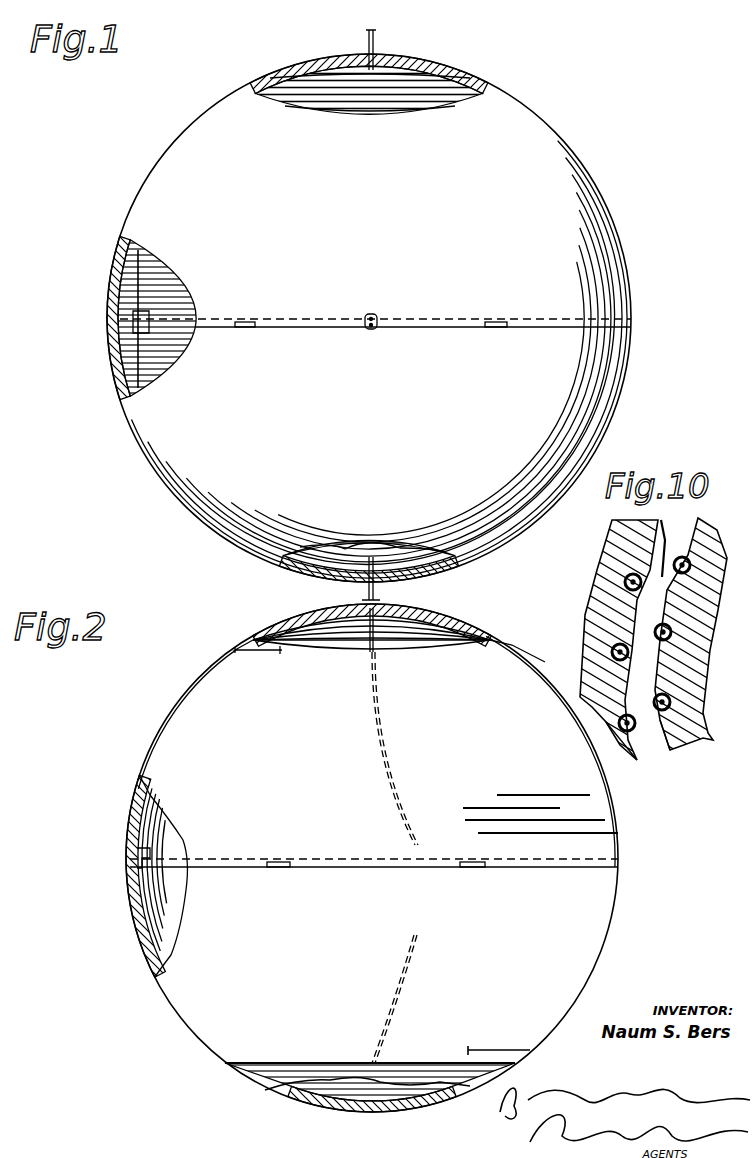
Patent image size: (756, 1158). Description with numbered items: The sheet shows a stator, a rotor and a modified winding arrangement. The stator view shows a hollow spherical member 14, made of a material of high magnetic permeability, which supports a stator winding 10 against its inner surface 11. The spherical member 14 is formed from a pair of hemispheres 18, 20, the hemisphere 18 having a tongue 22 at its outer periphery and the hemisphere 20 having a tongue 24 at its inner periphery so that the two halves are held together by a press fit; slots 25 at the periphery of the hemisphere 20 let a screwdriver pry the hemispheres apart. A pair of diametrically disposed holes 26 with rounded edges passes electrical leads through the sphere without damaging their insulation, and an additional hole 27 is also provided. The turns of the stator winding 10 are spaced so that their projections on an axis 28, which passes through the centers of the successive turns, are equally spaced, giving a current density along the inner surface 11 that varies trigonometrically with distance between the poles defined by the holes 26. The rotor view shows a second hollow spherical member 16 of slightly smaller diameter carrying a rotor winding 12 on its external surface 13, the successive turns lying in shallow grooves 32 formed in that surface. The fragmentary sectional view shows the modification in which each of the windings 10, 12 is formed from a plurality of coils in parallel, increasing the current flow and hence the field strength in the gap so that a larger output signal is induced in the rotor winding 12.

In FIG. 1, the stator winding 10 is at (113, 300).
In FIG. 10, the stator winding 10 is at (648, 578).
In FIG. 1, the inner surface 11 is at (397, 578).
In FIG. 2, the rotor winding 12 is at (133, 812).
In FIG. 10, the rotor winding 12 is at (652, 705).
In FIG. 2, the external surface 13 is at (244, 646).
In FIG. 1, the hollow spherical member 14 is at (128, 166).
In FIG. 2, the hollow spherical member 16 is at (133, 718).
In FIG. 1, the hemisphere 18 is at (538, 150).
In FIG. 1, the hemisphere 20 is at (598, 400).
In FIG. 1, the tongue 22 is at (112, 324).
In FIG. 1, the tongue 24 is at (110, 344).
In FIG. 1, the slots 25 is at (243, 330).
In FIG. 1, the holes 26 is at (371, 56).
In FIG. 1, the additional hole 27 is at (378, 314).
In FIG. 1, the axis 28 is at (372, 8).
In FIG. 2, the shallow grooves 32 is at (440, 626).
In FIG. 10, the shallow grooves 32 is at (682, 565).